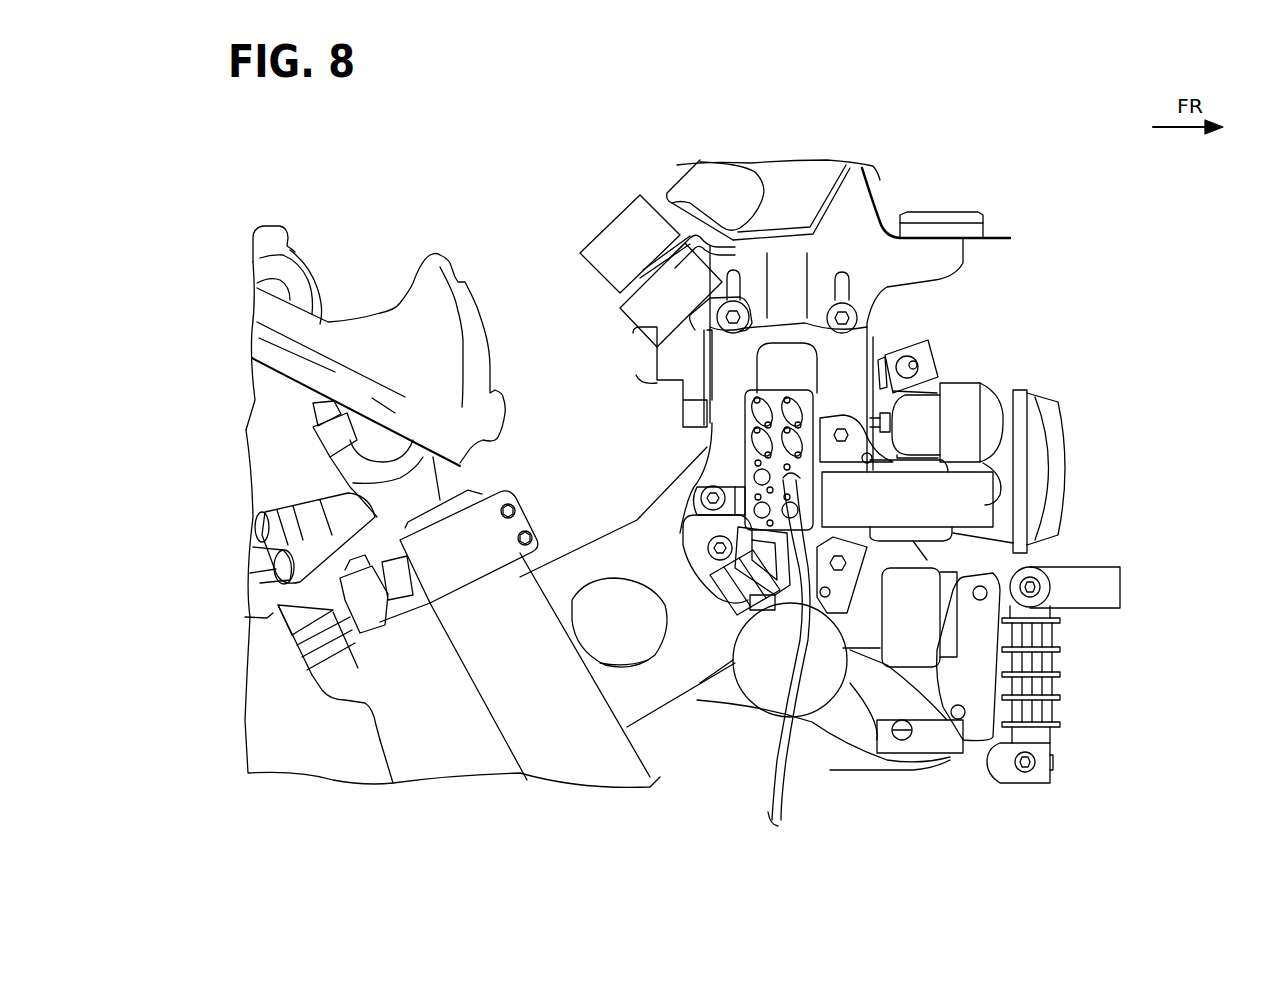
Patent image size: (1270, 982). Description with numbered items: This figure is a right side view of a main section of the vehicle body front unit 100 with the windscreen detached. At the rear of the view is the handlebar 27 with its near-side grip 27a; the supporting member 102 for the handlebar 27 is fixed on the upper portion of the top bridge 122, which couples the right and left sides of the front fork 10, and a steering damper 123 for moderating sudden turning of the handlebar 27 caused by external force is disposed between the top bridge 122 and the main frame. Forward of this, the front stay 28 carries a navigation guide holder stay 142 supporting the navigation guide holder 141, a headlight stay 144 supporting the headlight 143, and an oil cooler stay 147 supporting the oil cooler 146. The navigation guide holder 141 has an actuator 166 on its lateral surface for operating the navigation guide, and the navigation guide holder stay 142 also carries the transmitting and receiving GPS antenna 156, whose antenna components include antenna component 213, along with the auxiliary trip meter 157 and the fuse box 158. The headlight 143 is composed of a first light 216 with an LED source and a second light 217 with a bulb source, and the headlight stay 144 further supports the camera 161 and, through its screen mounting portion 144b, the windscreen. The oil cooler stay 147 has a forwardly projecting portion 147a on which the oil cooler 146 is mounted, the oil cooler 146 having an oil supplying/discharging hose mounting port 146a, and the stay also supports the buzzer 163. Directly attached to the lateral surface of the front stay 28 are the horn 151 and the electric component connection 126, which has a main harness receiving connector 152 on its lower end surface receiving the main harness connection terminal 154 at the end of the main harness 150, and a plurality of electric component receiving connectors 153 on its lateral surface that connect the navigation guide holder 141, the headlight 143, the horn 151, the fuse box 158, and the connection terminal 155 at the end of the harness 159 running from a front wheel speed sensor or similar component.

The front fork 10 is at (567, 747).
The handlebar 27 is at (270, 226).
The grip 27a is at (300, 278).
The front stay 28 is at (652, 692).
The vehicle body front unit 100 is at (1105, 265).
The supporting member 102 is at (350, 472).
The top bridge 122 is at (488, 522).
The steering damper 123 is at (310, 505).
The electric component connection 126 is at (738, 440).
The navigation guide holder 141 is at (786, 190).
The navigation guide holder stay 142 is at (861, 186).
The headlight 143 is at (1050, 398).
The headlight stay 144 is at (883, 445).
The screen mounting portion 144b is at (928, 353).
The oil cooler 146 is at (1060, 658).
The oil supplying/discharging hose mounting port 146a is at (1036, 771).
The oil cooler stay 147 is at (1102, 582).
The forwardly projecting portion 147a is at (1108, 601).
The main harness 150 is at (720, 612).
The horn 151 is at (807, 705).
The main harness receiving connector 152 is at (710, 545).
The electric component receiving connector 153 is at (752, 470).
The main harness connection terminal 154 is at (752, 603).
The connection terminal 155 is at (750, 410).
The transmitting and receiving GPS antenna 156 is at (941, 208).
The auxiliary trip meter 157 is at (616, 226).
The fuse box 158 is at (628, 310).
The harness 159 is at (766, 798).
The camera 161 is at (987, 503).
The buzzer 163 is at (931, 716).
The actuator 166 is at (716, 186).
The antenna component 213 is at (986, 231).
The first light 216 is at (1040, 450).
The second light 217 is at (967, 420).